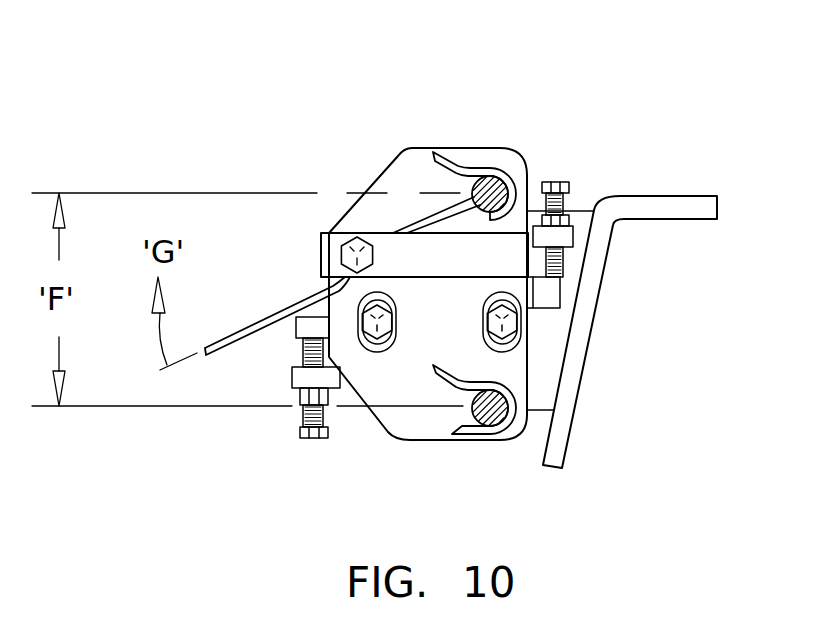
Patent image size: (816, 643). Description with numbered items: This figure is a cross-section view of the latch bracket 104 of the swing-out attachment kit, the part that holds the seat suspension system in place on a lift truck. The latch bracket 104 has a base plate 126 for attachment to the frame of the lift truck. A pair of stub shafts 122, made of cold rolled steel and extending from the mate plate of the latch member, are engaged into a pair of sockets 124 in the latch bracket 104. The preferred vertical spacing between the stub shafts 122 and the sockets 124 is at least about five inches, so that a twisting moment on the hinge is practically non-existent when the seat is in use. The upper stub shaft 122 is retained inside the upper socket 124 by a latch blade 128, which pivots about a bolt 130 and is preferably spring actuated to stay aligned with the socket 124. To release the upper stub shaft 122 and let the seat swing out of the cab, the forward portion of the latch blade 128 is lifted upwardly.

The latch bracket 104 is at (522, 88).
The stub shafts 122 is at (505, 190).
The sockets 124 is at (462, 158).
The base plate 126 is at (663, 197).
The latch blade 128 is at (417, 226).
The bolt 130 is at (352, 240).